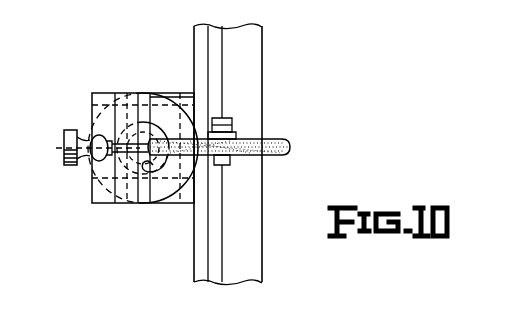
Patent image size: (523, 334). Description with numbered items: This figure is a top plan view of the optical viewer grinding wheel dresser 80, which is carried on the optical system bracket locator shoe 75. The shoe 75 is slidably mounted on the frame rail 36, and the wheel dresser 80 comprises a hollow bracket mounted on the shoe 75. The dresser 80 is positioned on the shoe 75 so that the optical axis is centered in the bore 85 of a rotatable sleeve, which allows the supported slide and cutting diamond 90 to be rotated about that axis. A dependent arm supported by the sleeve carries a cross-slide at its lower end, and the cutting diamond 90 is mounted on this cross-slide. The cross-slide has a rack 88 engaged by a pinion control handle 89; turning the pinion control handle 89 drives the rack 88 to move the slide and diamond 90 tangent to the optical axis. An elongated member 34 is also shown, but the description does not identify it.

The optical system bracket locator shoe 75 is at (197, 45).
The frame rail 36 is at (238, 68).
The bar 34 is at (268, 139).
The optical viewer grinding wheel dresser 80 is at (82, 103).
The cutting diamond 90 is at (150, 93).
The pinion control handle 89 is at (64, 164).
The rack 88 is at (140, 180).
The bore 85 is at (150, 172).